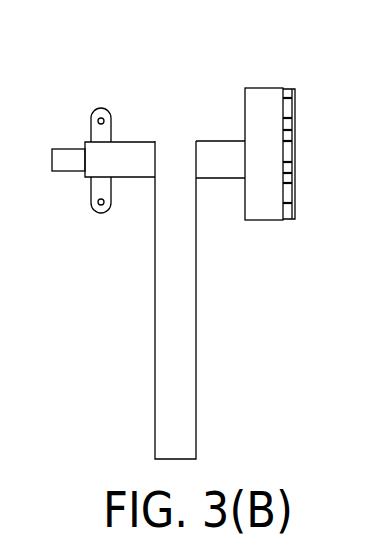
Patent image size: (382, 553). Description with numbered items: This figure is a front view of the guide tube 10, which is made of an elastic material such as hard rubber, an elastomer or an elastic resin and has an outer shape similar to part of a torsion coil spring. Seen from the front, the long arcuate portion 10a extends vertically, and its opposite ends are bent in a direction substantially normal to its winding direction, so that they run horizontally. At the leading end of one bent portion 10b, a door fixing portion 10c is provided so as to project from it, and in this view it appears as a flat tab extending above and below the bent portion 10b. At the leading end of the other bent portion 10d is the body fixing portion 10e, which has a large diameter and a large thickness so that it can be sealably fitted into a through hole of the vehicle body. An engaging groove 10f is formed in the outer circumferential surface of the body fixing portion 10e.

The guide tube 10 is at (187, 57).
The arcuate portion 10a is at (180, 357).
The bent portion 10b is at (140, 140).
The door fixing portion 10c is at (100, 133).
The bent portion 10d is at (222, 141).
The body fixing portion 10e is at (265, 107).
The engaging groove 10f is at (292, 132).